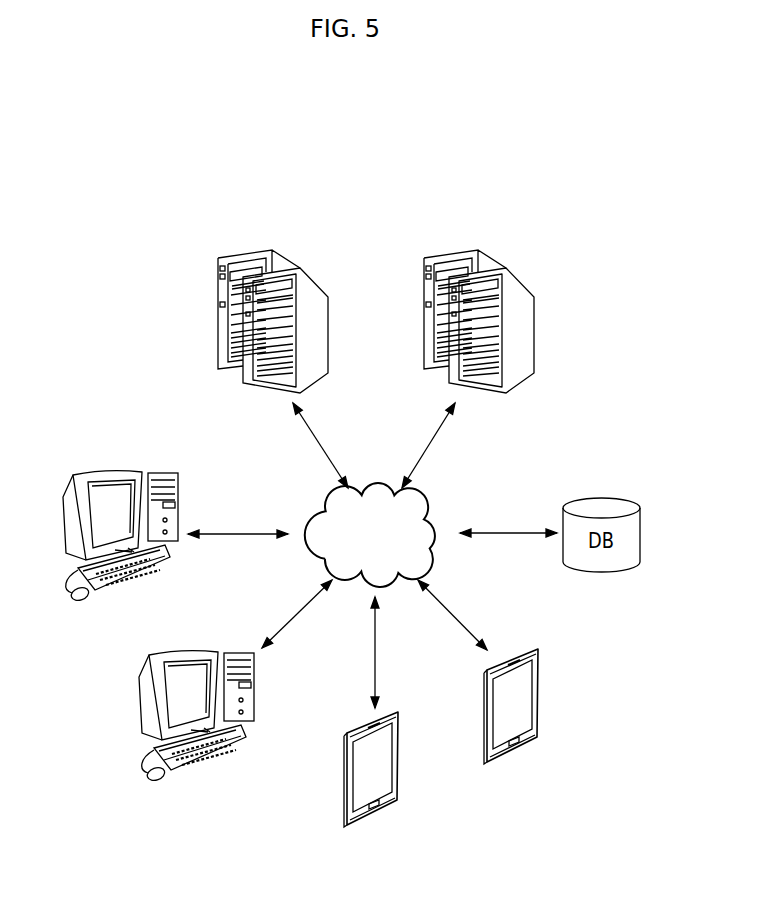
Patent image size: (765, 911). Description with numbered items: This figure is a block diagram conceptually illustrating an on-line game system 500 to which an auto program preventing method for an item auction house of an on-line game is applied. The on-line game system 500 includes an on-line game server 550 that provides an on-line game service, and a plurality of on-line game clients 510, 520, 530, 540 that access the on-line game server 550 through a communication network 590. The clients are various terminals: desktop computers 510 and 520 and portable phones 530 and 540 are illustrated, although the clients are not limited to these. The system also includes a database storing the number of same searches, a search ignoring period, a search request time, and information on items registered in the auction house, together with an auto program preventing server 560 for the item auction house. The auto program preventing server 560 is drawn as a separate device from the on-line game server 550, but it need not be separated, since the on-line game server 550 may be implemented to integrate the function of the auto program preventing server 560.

The on-line game system 500 is at (520, 233).
The on-line game client 510 is at (108, 493).
The on-line game client 520 is at (180, 687).
The on-line game client 530 is at (381, 791).
The on-line game client 540 is at (525, 718).
The on-line game server 550 is at (440, 265).
The auto program preventing server 560 is at (234, 265).
The communication network 590 is at (428, 503).